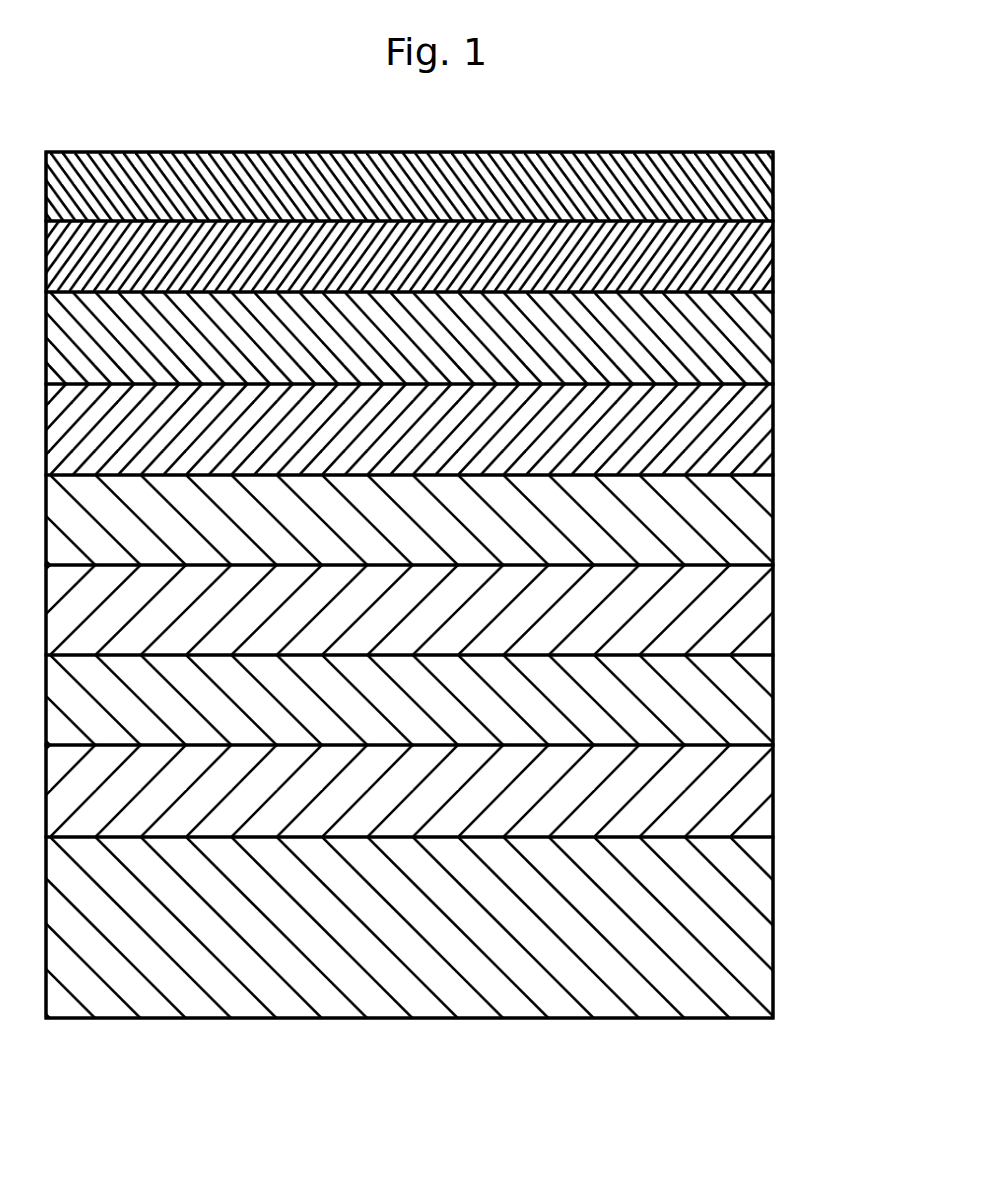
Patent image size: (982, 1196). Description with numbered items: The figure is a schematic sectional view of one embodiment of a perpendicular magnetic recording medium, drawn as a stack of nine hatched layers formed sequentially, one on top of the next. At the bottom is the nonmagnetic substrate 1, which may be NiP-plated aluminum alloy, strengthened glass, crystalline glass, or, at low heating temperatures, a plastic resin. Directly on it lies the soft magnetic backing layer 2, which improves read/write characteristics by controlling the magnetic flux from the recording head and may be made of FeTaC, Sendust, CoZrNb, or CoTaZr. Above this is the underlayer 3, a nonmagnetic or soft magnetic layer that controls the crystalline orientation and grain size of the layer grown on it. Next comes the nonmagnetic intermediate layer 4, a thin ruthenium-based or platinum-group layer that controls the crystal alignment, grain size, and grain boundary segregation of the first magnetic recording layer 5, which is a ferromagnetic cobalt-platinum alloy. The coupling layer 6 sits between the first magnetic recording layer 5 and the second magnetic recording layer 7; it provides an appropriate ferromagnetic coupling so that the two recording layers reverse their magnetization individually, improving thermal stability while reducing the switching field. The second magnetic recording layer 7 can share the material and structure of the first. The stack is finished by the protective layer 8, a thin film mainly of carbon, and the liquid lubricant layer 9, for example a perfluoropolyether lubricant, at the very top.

The nonmagnetic substrate 1 is at (760, 923).
The soft magnetic backing layer 2 is at (757, 777).
The underlayer 3 is at (760, 693).
The nonmagnetic intermediate layer 4 is at (760, 603).
The first magnetic recording layer 5 is at (762, 520).
The coupling layer 6 is at (757, 417).
The second magnetic recording layer 7 is at (757, 328).
The protective layer 8 is at (758, 255).
The liquid lubricant layer 9 is at (758, 180).